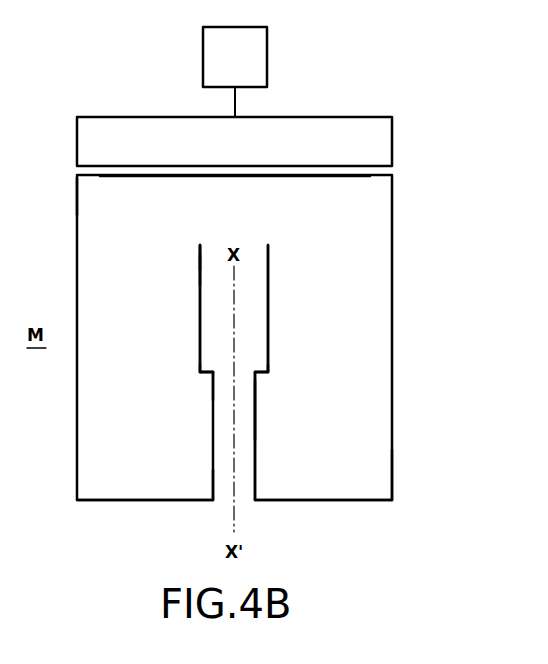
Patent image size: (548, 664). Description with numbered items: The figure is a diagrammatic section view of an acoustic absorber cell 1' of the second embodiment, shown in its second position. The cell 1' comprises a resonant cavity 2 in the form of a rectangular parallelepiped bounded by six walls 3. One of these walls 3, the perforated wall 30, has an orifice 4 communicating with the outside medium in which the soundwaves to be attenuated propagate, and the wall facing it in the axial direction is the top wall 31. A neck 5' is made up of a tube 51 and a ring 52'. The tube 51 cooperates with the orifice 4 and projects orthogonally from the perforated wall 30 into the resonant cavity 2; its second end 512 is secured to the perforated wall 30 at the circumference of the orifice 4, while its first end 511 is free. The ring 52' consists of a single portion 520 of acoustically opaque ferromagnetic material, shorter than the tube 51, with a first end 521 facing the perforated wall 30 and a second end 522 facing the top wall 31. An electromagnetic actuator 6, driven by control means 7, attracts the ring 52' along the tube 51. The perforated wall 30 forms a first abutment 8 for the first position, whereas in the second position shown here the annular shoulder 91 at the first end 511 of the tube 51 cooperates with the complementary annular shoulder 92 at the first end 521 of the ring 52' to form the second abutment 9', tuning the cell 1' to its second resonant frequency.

The acoustic absorber cell 1' is at (49, 63).
The control means 7 is at (241, 67).
The electromagnetic actuator 6 is at (241, 155).
The resonant cavity 2 is at (358, 266).
The top wall 31 is at (360, 176).
The walls 3 is at (98, 176).
The perforated wall 30 is at (124, 500).
The second end of the ring 522 is at (198, 243).
The single portion 520 is at (199, 268).
The ring 52' is at (176, 308).
The annular shoulder 91 is at (204, 370).
The second abutment 9' is at (192, 388).
The first end of the ring 521 is at (204, 378).
The first end of the tube 511 is at (262, 370).
The complementary annular shoulder 92 is at (261, 373).
The neck 5' is at (314, 419).
The tube 51 is at (246, 438).
The first abutment 8 is at (287, 472).
The second end of the tube 512 is at (212, 504).
The orifice 4 is at (246, 490).